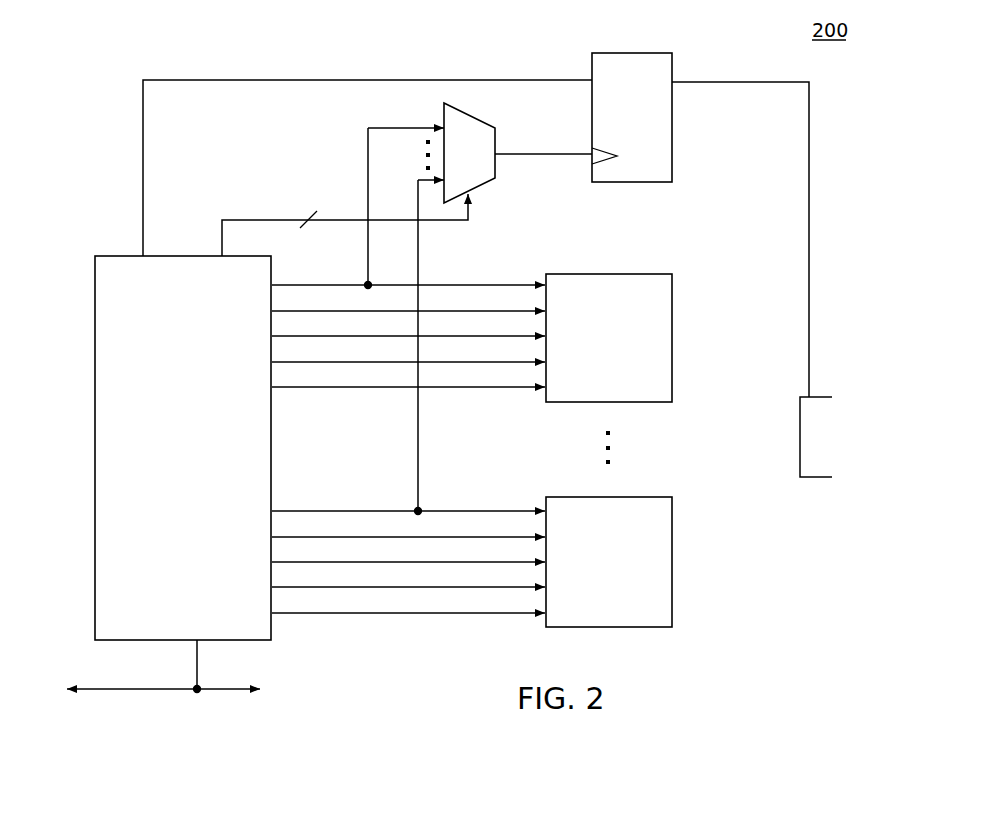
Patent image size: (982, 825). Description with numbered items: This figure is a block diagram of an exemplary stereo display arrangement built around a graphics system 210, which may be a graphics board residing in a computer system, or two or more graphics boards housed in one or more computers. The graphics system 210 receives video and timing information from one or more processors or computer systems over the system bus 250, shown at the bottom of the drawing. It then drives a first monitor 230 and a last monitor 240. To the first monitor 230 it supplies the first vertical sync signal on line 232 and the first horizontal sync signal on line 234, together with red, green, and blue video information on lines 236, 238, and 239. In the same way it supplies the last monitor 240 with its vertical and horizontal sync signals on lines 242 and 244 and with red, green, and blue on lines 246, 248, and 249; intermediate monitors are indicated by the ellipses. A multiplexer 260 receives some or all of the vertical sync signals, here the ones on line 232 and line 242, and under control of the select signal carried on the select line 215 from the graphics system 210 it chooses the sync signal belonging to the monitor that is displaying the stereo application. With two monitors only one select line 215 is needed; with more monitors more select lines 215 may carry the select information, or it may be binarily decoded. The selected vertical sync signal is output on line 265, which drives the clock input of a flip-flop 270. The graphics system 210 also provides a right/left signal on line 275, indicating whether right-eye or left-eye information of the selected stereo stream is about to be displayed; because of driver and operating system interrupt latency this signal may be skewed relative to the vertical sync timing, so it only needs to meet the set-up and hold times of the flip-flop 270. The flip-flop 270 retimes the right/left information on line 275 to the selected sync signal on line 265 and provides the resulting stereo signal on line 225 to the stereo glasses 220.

The graphics system 210 is at (95, 497).
The select line 215 is at (265, 220).
The stereo glasses 220 is at (807, 477).
The stereo signal line 225 is at (809, 287).
The first monitor 230 is at (672, 333).
The Vsync1 line 232 is at (441, 285).
The Hsync1 line 234 is at (441, 311).
The red line for first monitor 236 is at (441, 336).
The green line for first monitor 238 is at (441, 362).
The blue line for first monitor 239 is at (441, 387).
The last monitor 240 is at (672, 560).
The VsyncN line 242 is at (441, 511).
The HsyncN line 244 is at (441, 537).
The red line for last monitor 246 is at (441, 562).
The green line for last monitor 248 is at (441, 587).
The blue line for last monitor 249 is at (441, 613).
The system bus 250 is at (163, 689).
The multiplexer 260 is at (473, 113).
The multiplexer output line 265 is at (550, 154).
The flip-flop 270 is at (638, 53).
The right/left signal line 275 is at (417, 80).